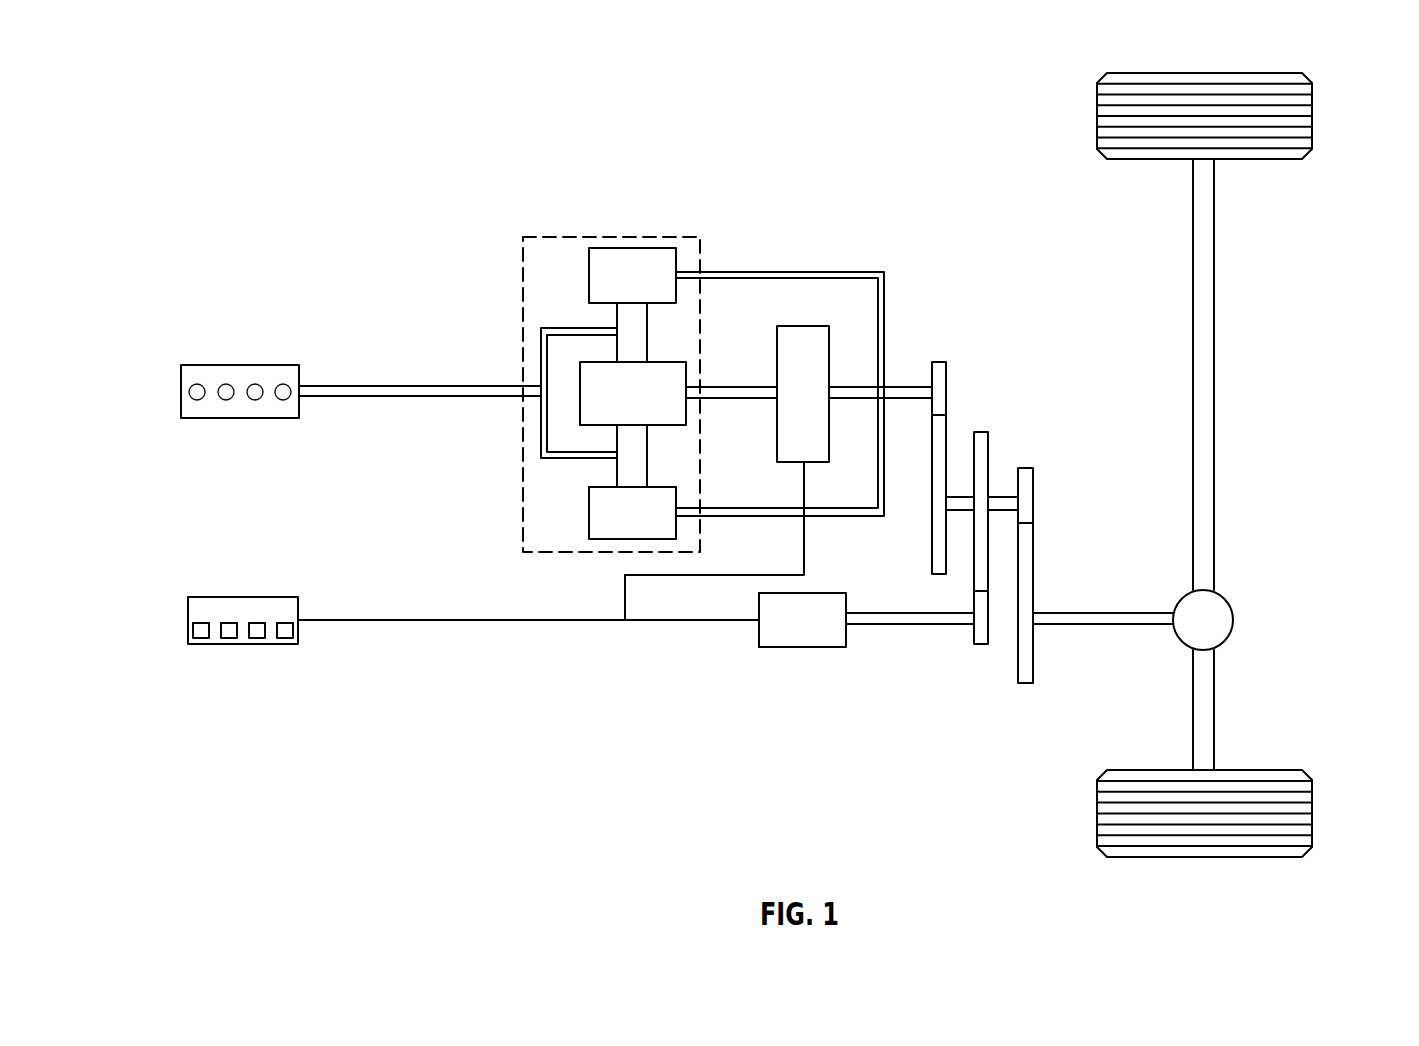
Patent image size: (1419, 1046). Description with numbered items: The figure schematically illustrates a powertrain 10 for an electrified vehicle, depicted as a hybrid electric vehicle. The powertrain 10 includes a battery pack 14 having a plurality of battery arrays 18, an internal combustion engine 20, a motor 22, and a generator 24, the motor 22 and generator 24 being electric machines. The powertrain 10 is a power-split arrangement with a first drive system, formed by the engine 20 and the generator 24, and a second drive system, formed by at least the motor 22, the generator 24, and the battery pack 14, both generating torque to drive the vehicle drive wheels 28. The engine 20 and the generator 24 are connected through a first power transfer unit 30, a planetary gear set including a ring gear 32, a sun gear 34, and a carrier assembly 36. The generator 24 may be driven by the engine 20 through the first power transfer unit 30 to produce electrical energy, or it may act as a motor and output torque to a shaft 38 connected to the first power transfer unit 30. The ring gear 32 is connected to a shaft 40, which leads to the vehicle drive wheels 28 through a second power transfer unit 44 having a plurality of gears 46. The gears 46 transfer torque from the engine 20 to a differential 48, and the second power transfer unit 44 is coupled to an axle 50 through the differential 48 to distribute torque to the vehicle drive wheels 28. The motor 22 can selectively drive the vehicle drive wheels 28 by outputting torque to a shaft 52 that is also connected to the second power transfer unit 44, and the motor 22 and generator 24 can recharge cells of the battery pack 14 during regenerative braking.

The powertrain 10 is at (296, 146).
The battery pack 14 is at (230, 640).
The battery arrays 18 is at (200, 644).
The internal combustion engine 20 is at (240, 418).
The motor 22 is at (801, 647).
The generator 24 is at (815, 326).
The vehicle drive wheels 28 is at (1312, 113).
The first power transfer unit 30 is at (587, 234).
The ring gear 32 is at (633, 247).
The sun gear 34 is at (698, 422).
The carrier assembly 36 is at (541, 426).
The shaft 38 is at (712, 386).
The shaft 40 is at (922, 402).
The second power transfer unit 44 is at (1050, 322).
The gears 46 is at (942, 362).
The differential 48 is at (1233, 620).
The axle 50 is at (1215, 412).
The shaft 52 is at (910, 625).